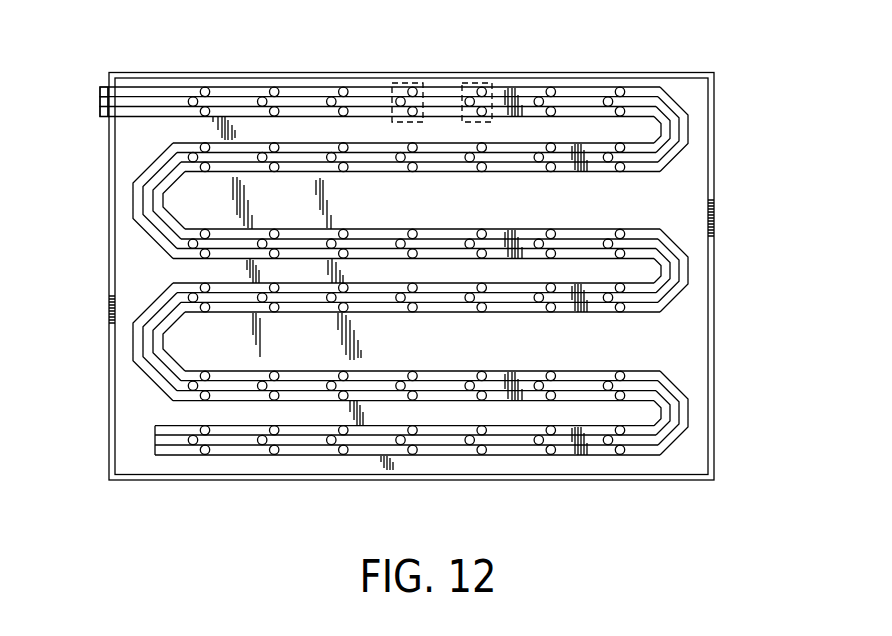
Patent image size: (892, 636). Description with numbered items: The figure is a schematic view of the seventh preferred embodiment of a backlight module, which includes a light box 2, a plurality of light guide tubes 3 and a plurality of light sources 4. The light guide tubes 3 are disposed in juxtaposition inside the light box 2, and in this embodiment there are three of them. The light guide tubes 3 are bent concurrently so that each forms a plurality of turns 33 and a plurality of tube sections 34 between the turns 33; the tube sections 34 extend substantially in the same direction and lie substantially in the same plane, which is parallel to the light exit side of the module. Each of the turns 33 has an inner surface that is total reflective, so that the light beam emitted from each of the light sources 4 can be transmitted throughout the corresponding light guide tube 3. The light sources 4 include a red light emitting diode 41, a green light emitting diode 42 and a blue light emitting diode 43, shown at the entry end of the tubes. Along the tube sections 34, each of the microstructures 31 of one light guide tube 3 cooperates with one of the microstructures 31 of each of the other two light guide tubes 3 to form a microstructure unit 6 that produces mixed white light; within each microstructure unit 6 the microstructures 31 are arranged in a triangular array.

The light box 2 is at (714, 135).
The light guide tubes 3 is at (650, 297).
The microstructures 31 is at (623, 103).
The turns 33 is at (677, 105).
The tube sections 34 is at (240, 87).
The light sources 4 is at (100, 77).
The red light emitting diode 41 is at (100, 92).
The green light emitting diode 42 is at (100, 102).
The blue light emitting diode 43 is at (100, 114).
The microstructure unit 6 is at (470, 82).